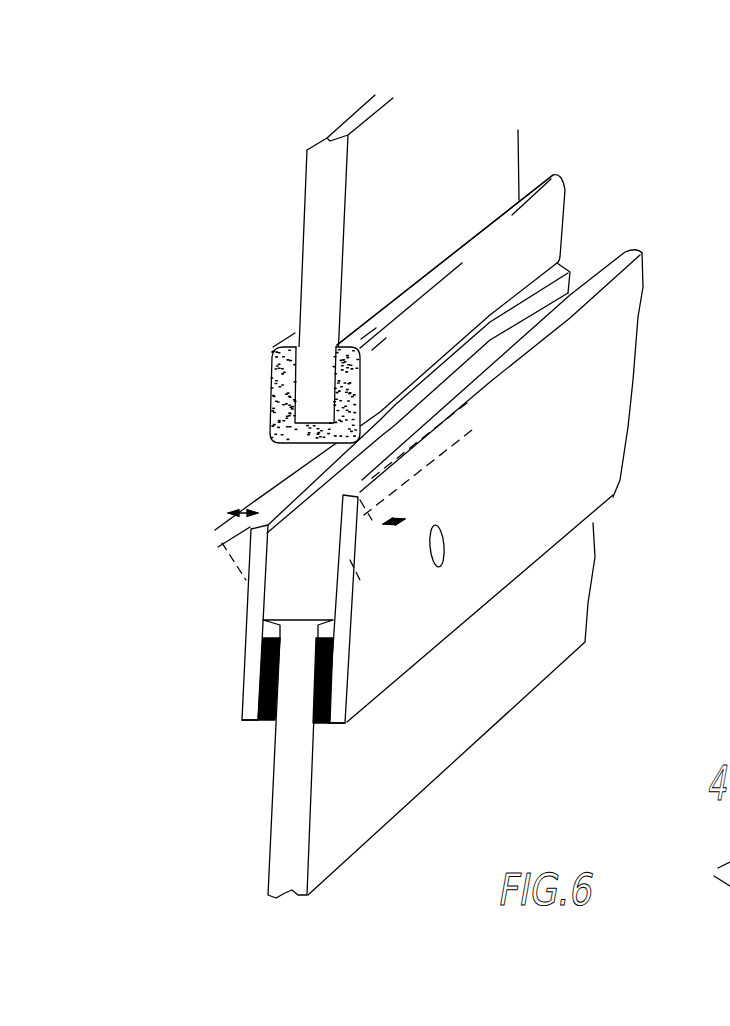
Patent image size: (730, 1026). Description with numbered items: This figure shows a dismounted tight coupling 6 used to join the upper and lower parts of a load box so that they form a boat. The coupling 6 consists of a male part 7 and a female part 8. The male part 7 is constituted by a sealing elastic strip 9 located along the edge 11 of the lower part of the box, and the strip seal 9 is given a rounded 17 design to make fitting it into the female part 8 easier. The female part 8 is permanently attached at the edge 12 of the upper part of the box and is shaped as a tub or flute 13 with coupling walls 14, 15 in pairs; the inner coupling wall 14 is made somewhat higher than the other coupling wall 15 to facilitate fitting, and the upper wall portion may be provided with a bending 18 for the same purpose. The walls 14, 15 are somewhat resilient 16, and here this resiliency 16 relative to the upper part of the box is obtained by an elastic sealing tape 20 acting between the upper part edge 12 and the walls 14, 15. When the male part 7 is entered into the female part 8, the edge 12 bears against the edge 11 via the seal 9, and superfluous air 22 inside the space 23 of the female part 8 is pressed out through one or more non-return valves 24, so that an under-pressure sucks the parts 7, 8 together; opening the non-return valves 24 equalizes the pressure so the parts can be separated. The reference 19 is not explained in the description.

The tight coupling 6 is at (644, 200).
The male part 7 is at (250, 378).
The female part 8 is at (190, 745).
The sealing elastic strip 9 is at (494, 294).
The edge of the lower part 11 is at (432, 164).
The edge of the upper part 12 is at (459, 714).
The flute 13 is at (300, 522).
The inner coupling wall 14 is at (586, 415).
The outer coupling wall 15 is at (256, 625).
The resiliency 16 is at (400, 519).
The rounded design 17 is at (266, 440).
The bending 18 is at (360, 555).
The plate edge 19 is at (608, 311).
The elastic sealing tape 20 is at (316, 716).
The superfluous air 22 is at (311, 573).
The space of the female part 23 is at (305, 617).
The non-return valve 24 is at (440, 548).